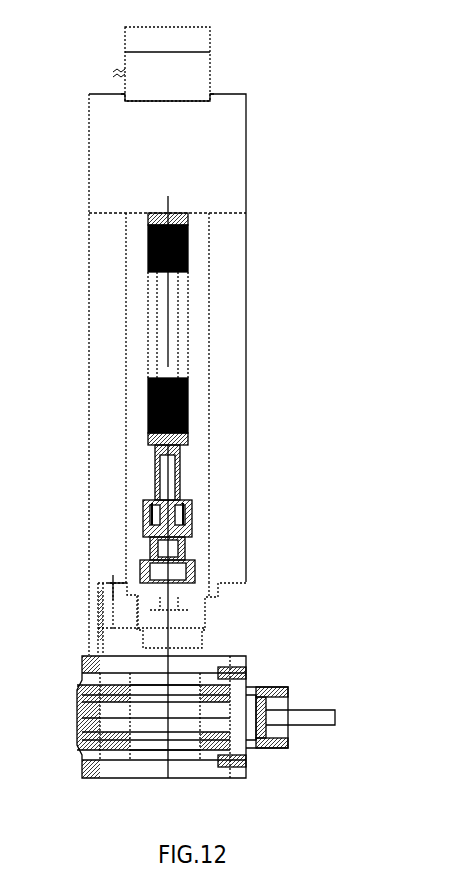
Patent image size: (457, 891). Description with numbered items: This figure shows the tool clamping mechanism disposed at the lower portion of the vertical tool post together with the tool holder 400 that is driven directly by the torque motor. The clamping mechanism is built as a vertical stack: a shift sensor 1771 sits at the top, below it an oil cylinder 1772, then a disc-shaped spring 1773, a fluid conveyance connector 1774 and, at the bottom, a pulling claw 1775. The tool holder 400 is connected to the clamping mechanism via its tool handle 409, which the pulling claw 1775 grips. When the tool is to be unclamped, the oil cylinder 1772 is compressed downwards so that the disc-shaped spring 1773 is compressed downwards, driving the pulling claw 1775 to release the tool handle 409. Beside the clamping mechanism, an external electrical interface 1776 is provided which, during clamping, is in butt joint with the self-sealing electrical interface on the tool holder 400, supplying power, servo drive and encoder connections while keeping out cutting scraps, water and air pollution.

The shift sensor 1771 is at (178, 47).
The oil cylinder 1772 is at (182, 206).
The disc-shaped spring 1773 is at (197, 381).
The fluid conveyance connector 1774 is at (182, 496).
The pulling claw 1775 is at (178, 565).
The external electrical interface 1776 is at (98, 582).
The tool handle 409 is at (160, 611).
The tool holder 400 is at (160, 662).